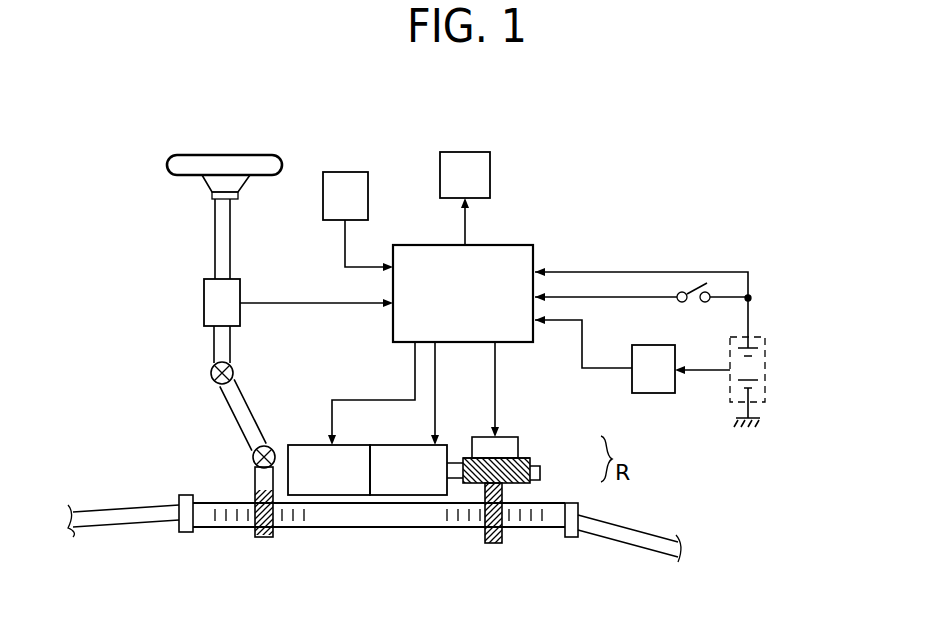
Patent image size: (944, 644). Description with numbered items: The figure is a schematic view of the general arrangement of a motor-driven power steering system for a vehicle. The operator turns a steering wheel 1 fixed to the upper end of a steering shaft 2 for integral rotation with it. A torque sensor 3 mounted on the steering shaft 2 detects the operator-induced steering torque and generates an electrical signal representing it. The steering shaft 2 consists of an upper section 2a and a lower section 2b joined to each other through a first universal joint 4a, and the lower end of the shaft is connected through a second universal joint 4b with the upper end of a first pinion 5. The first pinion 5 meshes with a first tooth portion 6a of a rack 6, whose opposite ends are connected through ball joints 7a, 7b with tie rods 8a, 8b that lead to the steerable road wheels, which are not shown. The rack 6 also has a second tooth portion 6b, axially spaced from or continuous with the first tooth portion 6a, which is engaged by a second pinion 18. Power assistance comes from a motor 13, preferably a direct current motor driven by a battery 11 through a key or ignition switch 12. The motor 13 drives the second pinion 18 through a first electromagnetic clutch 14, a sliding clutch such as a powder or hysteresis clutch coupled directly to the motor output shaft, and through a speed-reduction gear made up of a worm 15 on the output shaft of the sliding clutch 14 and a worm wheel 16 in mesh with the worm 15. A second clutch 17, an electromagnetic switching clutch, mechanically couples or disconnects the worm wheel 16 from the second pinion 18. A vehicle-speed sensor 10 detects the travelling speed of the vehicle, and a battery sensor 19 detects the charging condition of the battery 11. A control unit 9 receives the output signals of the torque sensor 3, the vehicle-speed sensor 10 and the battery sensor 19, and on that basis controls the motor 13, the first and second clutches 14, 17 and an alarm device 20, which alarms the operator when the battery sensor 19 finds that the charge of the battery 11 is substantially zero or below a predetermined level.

The steering wheel 1 is at (235, 160).
The steering shaft 2 is at (206, 262).
The upper section 2a is at (222, 247).
The lower section 2b is at (236, 421).
The torque sensor 3 is at (204, 282).
The first universal joint 4a is at (212, 378).
The second universal joint 4b is at (253, 458).
The first pinion 5 is at (272, 538).
The rack 6 is at (347, 518).
The first tooth portion 6a is at (293, 518).
The second tooth portion 6b is at (478, 522).
The ball joint 7a is at (186, 527).
The ball joint 7b is at (570, 538).
The tie rod 8a is at (117, 527).
The tie rod 8b is at (638, 548).
The control unit 9 is at (535, 248).
The vehicle-speed sensor 10 is at (347, 178).
The battery 11 is at (765, 335).
The ignition switch 12 is at (689, 303).
The motor 13 is at (308, 445).
The first electromagnetic clutch 14 is at (446, 446).
The worm 15 is at (541, 472).
The worm wheel 16 is at (532, 460).
The second clutch 17 is at (505, 440).
The second pinion 18 is at (496, 544).
The battery sensor 19 is at (657, 383).
The alarm device 20 is at (480, 172).